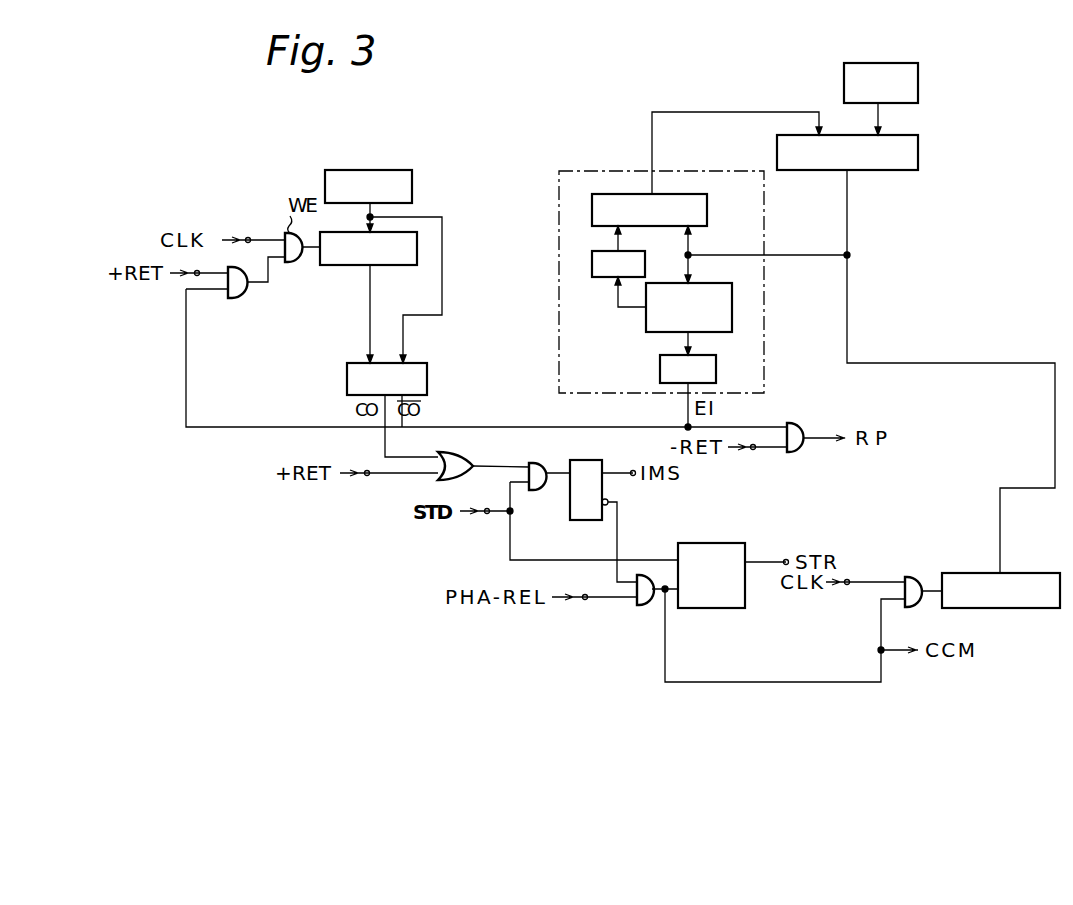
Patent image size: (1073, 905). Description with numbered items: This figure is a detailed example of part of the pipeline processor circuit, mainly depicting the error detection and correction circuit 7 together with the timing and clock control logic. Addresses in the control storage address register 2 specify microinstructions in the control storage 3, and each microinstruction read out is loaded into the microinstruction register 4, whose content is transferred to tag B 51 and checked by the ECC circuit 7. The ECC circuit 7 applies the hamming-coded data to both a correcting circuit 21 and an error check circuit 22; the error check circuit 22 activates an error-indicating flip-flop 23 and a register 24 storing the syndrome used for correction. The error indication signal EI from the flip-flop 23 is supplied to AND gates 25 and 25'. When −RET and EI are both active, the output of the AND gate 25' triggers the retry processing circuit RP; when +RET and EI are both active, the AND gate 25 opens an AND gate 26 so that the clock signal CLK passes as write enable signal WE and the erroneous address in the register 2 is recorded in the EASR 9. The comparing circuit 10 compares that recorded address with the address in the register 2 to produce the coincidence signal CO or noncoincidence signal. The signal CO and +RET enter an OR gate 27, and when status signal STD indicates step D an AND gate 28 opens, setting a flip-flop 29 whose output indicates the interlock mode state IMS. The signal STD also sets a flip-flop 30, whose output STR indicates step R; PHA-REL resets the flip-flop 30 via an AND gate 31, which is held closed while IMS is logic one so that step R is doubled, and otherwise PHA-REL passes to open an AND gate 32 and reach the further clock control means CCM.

The control storage address register 2 is at (413, 180).
The control storage 3 is at (919, 86).
The microinstruction register 4 is at (919, 153).
The error detection and correction circuit 7 is at (558, 182).
The EASR 9 is at (390, 266).
The comparing circuit 10 is at (428, 373).
The correcting circuit 21 is at (708, 210).
The error check circuit 22 is at (645, 326).
The error-indicating flip-flop 23 is at (660, 371).
The register 24 is at (600, 278).
The AND gate 25 is at (235, 301).
The AND gate 25' is at (807, 418).
The AND gate 26 is at (290, 263).
The OR gate 27 is at (451, 449).
The AND gate 28 is at (538, 462).
The flip-flop 29 is at (600, 460).
The flip-flop 30 is at (724, 543).
The AND gate 31 is at (645, 606).
The AND gate 32 is at (913, 576).
The tag B 51 is at (1005, 609).